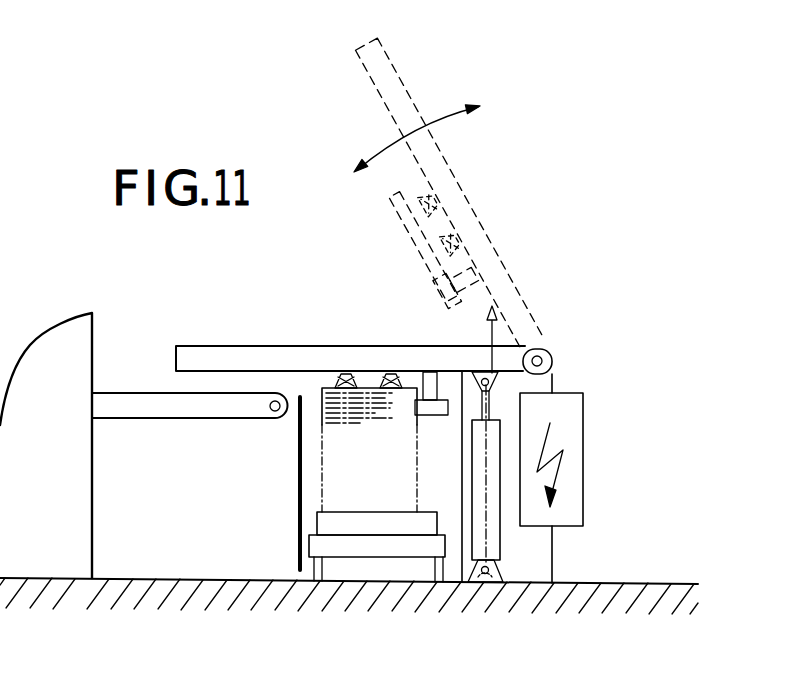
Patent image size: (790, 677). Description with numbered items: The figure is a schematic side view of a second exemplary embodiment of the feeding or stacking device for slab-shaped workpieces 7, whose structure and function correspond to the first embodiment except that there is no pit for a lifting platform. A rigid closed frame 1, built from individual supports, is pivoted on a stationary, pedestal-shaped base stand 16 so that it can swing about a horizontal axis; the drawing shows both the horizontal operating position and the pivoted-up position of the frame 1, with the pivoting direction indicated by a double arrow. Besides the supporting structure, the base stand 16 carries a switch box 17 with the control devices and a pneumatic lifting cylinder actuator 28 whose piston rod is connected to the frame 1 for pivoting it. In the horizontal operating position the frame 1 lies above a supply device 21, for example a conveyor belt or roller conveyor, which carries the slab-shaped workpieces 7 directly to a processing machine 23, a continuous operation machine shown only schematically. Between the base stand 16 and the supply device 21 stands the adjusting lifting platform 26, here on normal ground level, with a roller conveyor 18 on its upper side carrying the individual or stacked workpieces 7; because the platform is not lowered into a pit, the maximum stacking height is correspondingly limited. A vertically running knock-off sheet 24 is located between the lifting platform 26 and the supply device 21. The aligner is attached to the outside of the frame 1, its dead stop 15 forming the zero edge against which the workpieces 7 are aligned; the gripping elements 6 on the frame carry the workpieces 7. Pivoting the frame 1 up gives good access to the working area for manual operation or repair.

The frame 1 is at (393, 82).
The gripping pads 6 is at (386, 372).
The slab-shaped workpieces 7 is at (337, 461).
The dead stop 15 is at (412, 248).
The base stand 16 is at (540, 553).
The switch box 17 is at (566, 415).
The roller conveyor 18 is at (355, 522).
The supply device 21 is at (150, 410).
The processing machine 23 is at (78, 518).
The knock-off sheet 24 is at (298, 504).
The lifting platform 26 is at (410, 547).
The pneumatic lifting cylinder actuator 28 is at (498, 420).